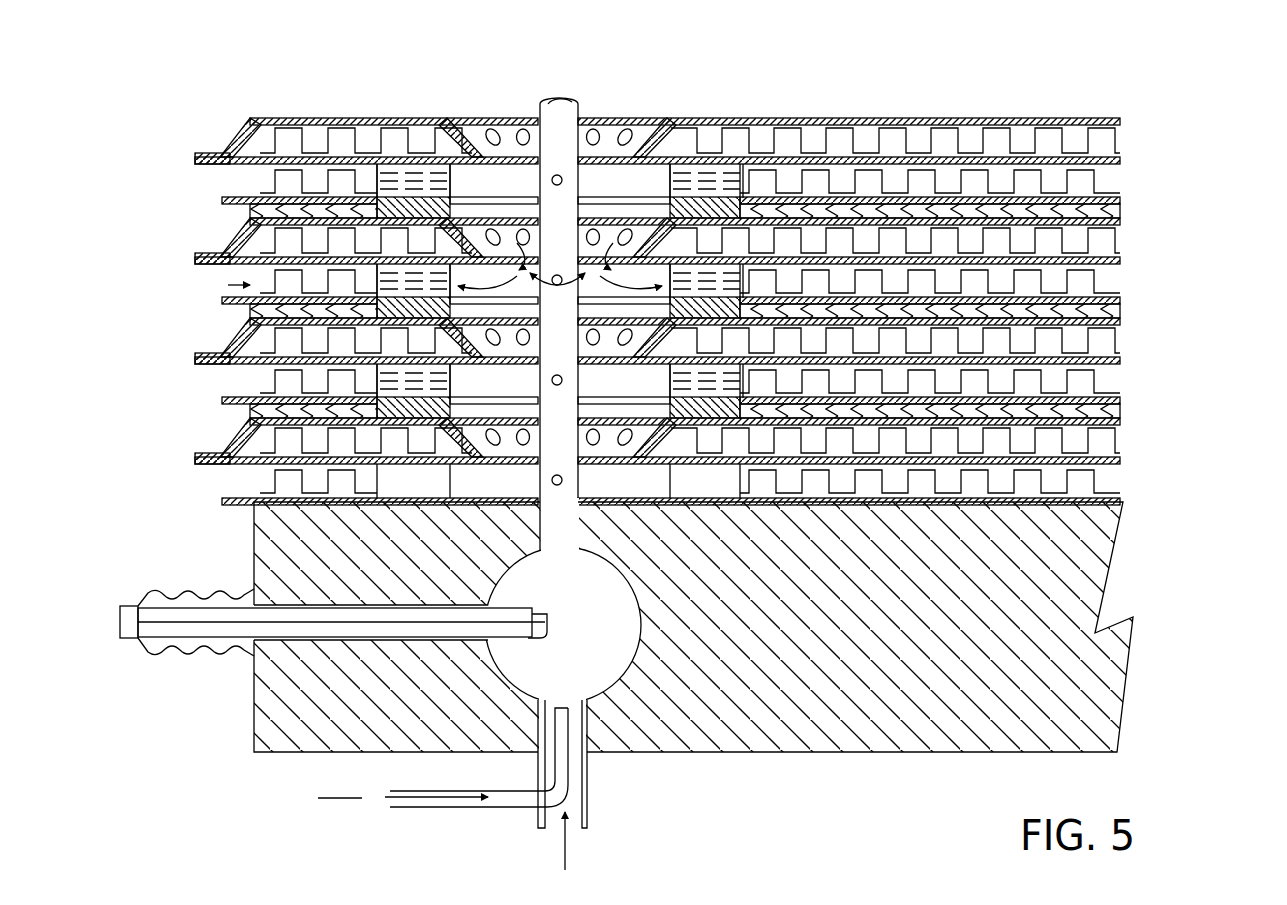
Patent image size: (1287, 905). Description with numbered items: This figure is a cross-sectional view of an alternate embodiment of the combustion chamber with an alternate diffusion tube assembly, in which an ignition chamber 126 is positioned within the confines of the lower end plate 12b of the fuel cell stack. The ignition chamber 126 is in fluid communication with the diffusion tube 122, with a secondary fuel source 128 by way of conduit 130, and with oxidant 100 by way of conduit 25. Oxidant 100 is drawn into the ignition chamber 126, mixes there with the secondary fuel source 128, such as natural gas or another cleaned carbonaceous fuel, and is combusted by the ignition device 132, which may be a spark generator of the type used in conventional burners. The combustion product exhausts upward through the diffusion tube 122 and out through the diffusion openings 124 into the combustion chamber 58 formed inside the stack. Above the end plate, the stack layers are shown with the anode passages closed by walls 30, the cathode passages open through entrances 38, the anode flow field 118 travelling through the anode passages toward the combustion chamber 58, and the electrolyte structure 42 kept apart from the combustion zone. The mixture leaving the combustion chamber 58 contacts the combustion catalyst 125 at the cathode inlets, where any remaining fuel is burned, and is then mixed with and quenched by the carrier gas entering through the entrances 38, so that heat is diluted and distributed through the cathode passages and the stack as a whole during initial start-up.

The lower end plate 12b is at (1105, 580).
The conduit 25 is at (537, 819).
The walls 30 is at (200, 250).
The entrances 38 is at (237, 273).
The electrolyte structure 42 is at (262, 410).
The combustion chamber 58 is at (613, 158).
The oxidant 100 is at (570, 843).
The anode flow field 118 is at (1120, 237).
The diffusion tube 122 is at (538, 104).
The diffusion openings 124 is at (558, 175).
The combustion catalyst 125 is at (817, 281).
The ignition chamber 126 is at (495, 672).
The secondary fuel source 128 is at (362, 800).
The conduit 130 is at (446, 808).
The ignition device 132 is at (145, 605).